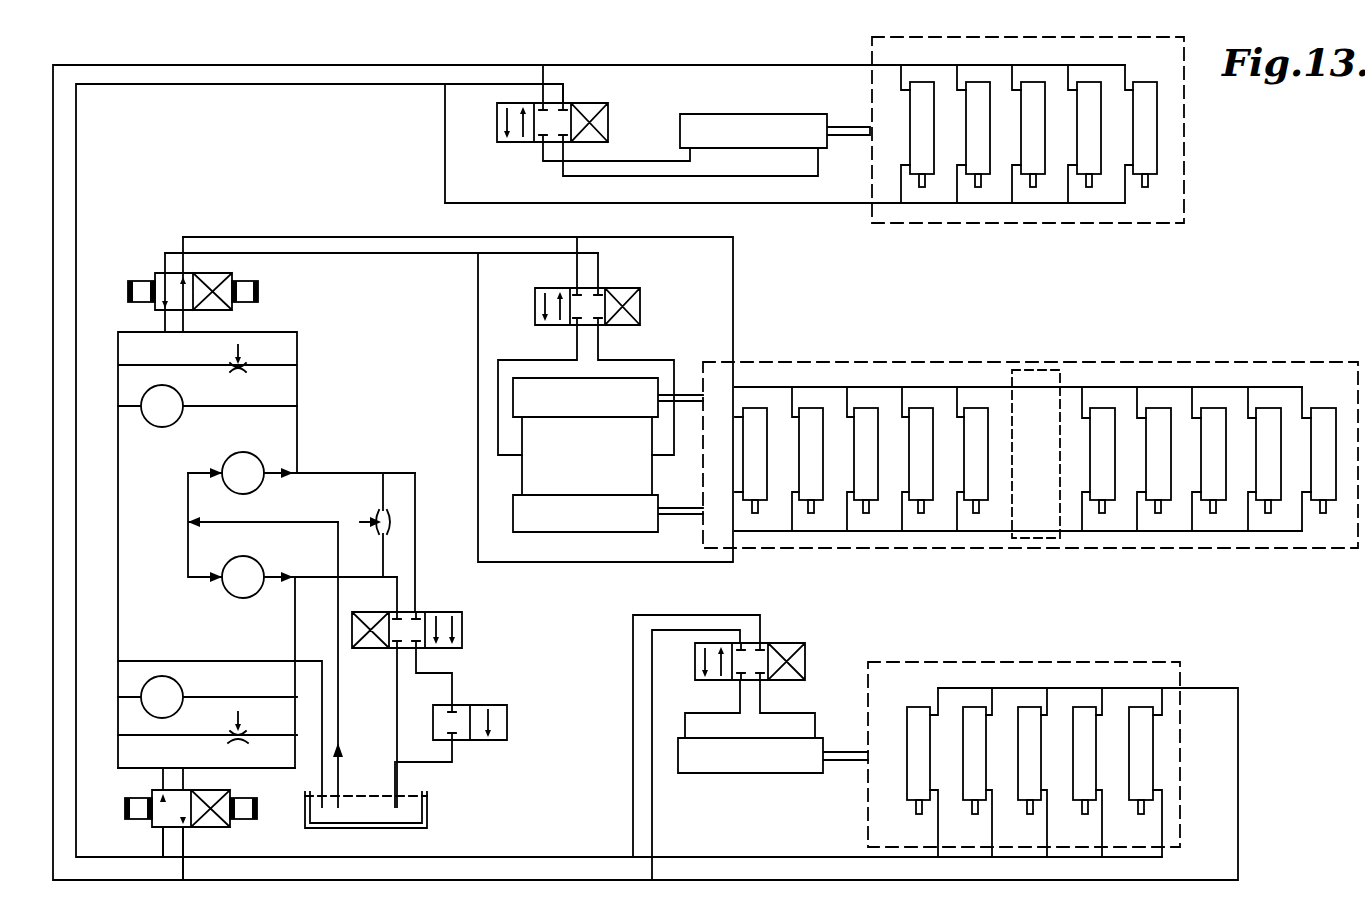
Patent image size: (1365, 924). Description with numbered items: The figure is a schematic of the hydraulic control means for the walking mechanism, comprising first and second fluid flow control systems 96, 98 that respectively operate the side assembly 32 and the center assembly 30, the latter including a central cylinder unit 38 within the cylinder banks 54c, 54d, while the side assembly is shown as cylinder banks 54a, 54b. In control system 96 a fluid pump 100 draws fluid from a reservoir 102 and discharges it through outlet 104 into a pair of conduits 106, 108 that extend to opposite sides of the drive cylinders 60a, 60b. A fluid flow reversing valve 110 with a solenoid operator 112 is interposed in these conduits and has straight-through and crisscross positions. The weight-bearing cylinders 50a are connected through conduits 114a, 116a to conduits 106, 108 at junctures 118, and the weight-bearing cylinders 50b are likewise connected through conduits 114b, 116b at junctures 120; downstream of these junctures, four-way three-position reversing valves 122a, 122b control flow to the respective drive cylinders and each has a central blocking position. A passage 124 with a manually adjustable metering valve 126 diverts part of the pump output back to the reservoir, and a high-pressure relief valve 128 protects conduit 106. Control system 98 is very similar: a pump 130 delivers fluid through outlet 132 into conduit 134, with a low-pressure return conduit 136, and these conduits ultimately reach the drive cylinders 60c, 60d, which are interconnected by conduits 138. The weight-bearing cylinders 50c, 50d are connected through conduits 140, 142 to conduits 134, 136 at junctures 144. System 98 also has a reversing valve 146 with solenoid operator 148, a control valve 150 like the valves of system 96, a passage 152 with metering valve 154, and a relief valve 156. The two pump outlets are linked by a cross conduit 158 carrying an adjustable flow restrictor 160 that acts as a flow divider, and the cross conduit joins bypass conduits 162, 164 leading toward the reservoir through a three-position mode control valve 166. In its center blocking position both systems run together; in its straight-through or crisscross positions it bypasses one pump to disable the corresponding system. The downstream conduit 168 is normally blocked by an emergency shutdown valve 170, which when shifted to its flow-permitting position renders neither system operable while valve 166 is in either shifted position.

The center assembly 30 is at (1274, 346).
The side assembly 32 is at (1203, 218).
The central cylinder unit 38 is at (1035, 368).
The weight-bearing cylinders 50a is at (1151, 736).
The weight-bearing cylinders 50b is at (1157, 119).
The weight-bearing cylinders 50c is at (980, 434).
The weight-bearing cylinders 50d is at (1337, 398).
The cylinder bank 54a is at (1036, 662).
The cylinder bank 54b is at (955, 223).
The cylinder bank 54c is at (852, 364).
The cylinder bank 54d is at (1166, 356).
The drive cylinder 60a is at (740, 772).
The drive cylinder 60b is at (712, 118).
The drive cylinder 60c is at (571, 410).
The drive cylinder 60d is at (557, 528).
The first fluid flow control system 96 is at (205, 608).
The second fluid flow control system 98 is at (180, 461).
The fluid pump 100 is at (246, 559).
The reservoir 102 is at (427, 798).
The pump outlet 104 is at (274, 582).
The conduit 106 is at (191, 65).
The conduit 108 is at (189, 96).
The fluid flow reversing valve 110 is at (152, 826).
The solenoid operator 112 is at (130, 798).
The conduit 114a is at (830, 884).
The conduit 114b is at (745, 65).
The conduit 116a is at (732, 856).
The conduit 116b is at (760, 206).
The junctures 118 is at (627, 855).
The junctures 120 is at (550, 60).
The fluid flow reversing valve 122a is at (805, 663).
The fluid flow reversing valve 122b is at (605, 109).
The passage 124 is at (133, 745).
The fluid metering valve 126 is at (240, 728).
The high-pressure relief valve 128 is at (166, 690).
The pump 130 is at (266, 446).
The pump outlet 132 is at (274, 480).
The conduit 134 is at (454, 234).
The low-pressure fluid return conduit 136 is at (378, 258).
The conduits 138 is at (645, 462).
The conduit 140 is at (920, 532).
The conduit 142 is at (924, 390).
The junctures 144 is at (592, 232).
The fluid flow reversing valve 146 is at (155, 273).
The solenoid operator 148 is at (258, 290).
The control valve 150 is at (640, 302).
The passage 152 is at (150, 366).
The adjustable metering valve 154 is at (239, 370).
The high-pressure system relief valve 156 is at (180, 400).
The cross conduit 158 is at (382, 474).
The flow restrictor 160 is at (390, 522).
The bypass conduit 162 is at (338, 580).
The bypass conduit 164 is at (414, 545).
The mode control valve 166 is at (462, 630).
The downstream conduit 168 is at (452, 680).
The emergency shutdown valve 170 is at (507, 714).